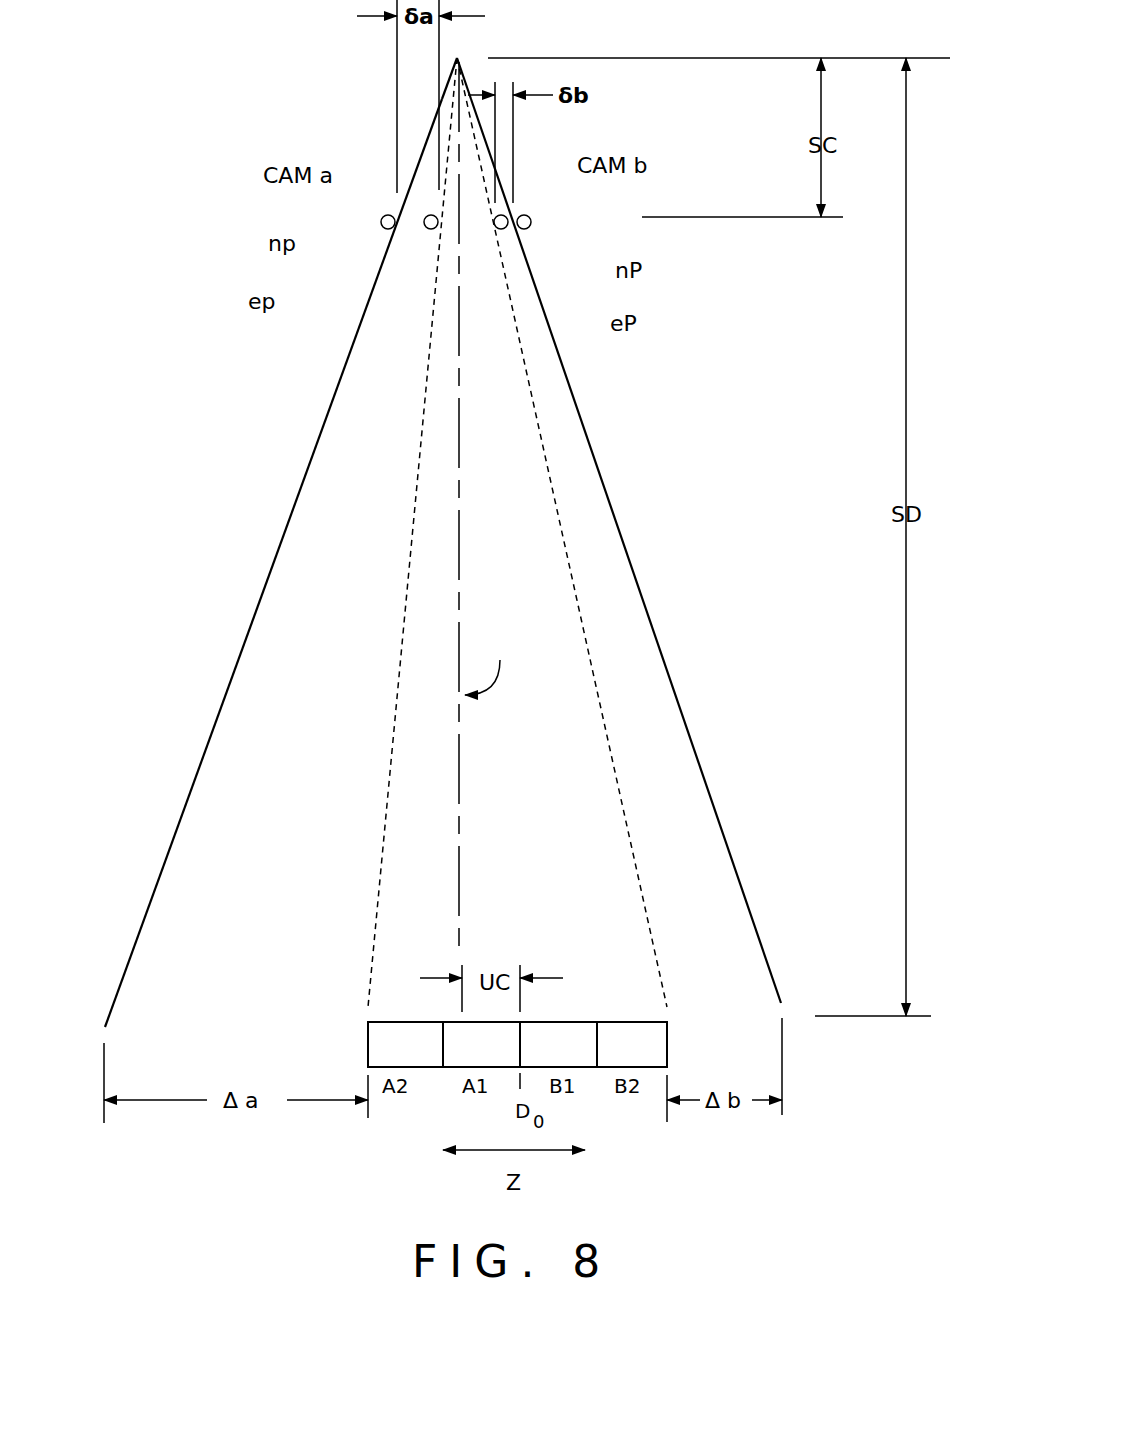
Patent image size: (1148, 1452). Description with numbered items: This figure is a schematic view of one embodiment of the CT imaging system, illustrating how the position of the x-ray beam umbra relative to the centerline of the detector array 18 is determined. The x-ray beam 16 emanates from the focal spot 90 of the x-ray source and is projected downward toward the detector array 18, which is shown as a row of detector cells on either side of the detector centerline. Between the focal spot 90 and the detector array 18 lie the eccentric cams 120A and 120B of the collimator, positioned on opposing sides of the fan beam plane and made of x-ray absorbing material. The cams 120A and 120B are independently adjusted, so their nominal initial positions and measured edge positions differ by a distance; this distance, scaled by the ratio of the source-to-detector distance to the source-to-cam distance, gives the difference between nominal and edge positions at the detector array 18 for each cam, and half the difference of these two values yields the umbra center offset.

The focal spot 90 is at (464, 58).
The x-ray beam 16 is at (703, 757).
The detector array 18 is at (670, 1043).
The eccentric cam 120A is at (425, 233).
The eccentric cam 120B is at (603, 320).